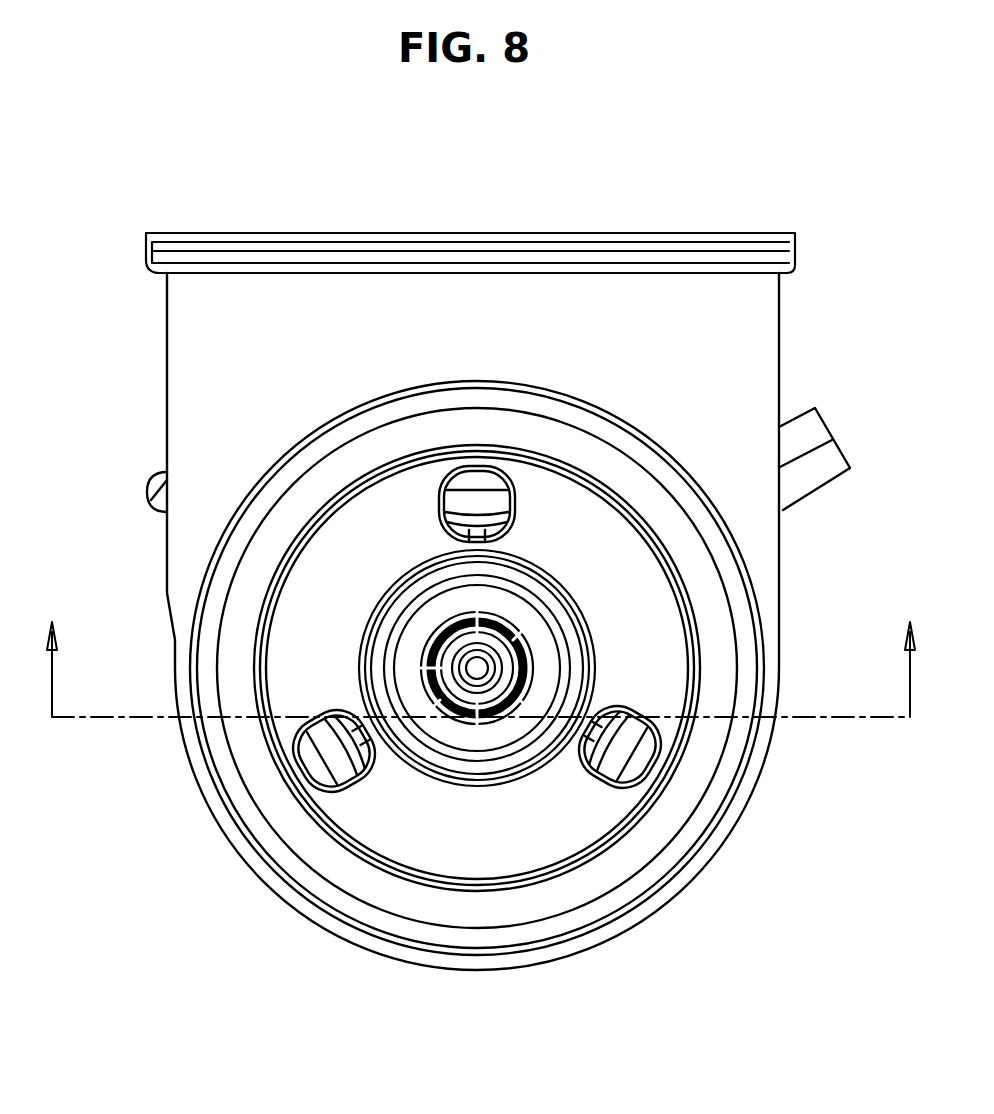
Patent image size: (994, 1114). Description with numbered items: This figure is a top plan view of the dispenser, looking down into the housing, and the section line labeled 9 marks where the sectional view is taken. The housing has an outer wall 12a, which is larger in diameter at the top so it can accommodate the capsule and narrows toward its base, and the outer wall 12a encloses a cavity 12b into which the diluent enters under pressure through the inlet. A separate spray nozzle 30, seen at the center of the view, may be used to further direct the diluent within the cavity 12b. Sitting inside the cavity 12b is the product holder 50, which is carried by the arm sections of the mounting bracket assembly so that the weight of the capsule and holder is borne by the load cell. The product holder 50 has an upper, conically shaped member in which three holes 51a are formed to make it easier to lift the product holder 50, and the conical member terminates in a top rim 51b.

The section line 9- 9 is at (480, 647).
The outer wall 12a is at (728, 608).
The cavity 12b is at (740, 568).
The spray nozzle 30 is at (480, 666).
The product holder 50 is at (308, 813).
The holes 51a is at (320, 717).
The top rim 51b is at (607, 488).